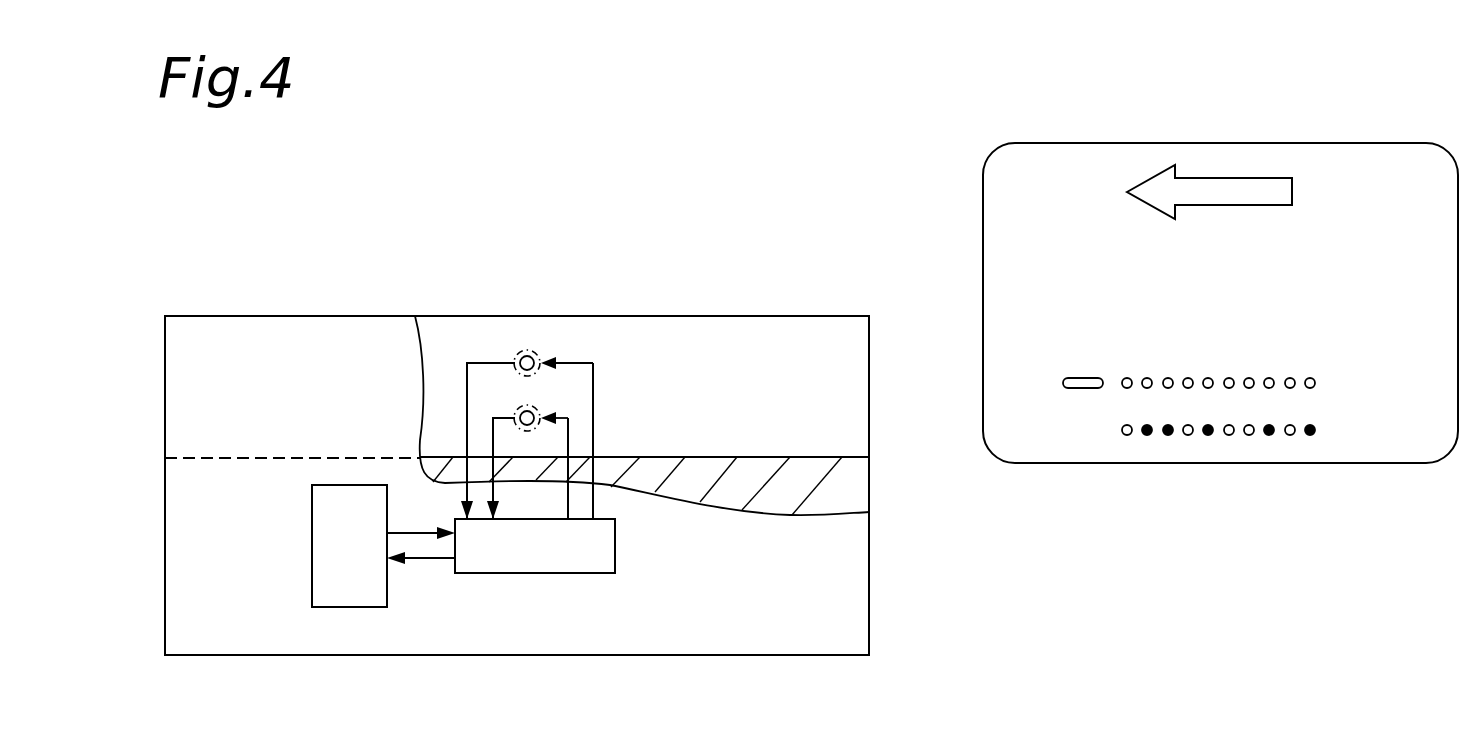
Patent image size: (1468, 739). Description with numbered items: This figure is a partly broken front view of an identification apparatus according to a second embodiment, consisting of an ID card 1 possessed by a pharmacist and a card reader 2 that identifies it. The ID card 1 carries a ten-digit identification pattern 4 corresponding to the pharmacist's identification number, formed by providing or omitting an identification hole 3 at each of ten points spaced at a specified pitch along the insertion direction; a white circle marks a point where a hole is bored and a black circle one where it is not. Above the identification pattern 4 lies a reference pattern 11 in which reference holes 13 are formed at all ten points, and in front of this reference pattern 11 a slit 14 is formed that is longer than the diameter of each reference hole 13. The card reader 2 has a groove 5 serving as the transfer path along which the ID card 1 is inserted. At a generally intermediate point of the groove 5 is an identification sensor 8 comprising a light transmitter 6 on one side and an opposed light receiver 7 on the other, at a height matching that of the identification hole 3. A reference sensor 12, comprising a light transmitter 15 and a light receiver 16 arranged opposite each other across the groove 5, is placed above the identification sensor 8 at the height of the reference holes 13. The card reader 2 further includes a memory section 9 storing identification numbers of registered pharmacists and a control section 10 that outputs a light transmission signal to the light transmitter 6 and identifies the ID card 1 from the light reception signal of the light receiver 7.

The ID card 1 is at (1346, 143).
The card reader 2 is at (272, 316).
The identification hole 3 is at (1104, 469).
The identification pattern 4 is at (1198, 479).
The groove 5 is at (847, 457).
The light transmitter 6 is at (541, 412).
The light receiver 7 is at (538, 407).
The identification sensor 8 is at (586, 447).
The memory section 9 is at (312, 568).
The control section 10 is at (563, 575).
The reference pattern 11 is at (1182, 378).
The reference sensor 12 is at (527, 363).
The reference hole 13 is at (1122, 387).
The slit 14 is at (1081, 378).
The light transmitter 15 is at (538, 357).
The light receiver 16 is at (517, 358).